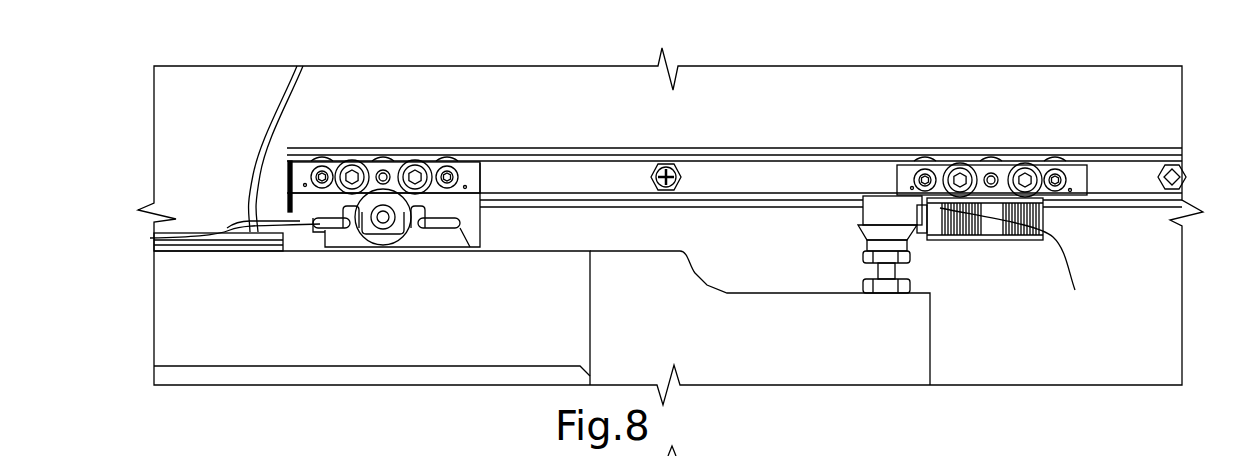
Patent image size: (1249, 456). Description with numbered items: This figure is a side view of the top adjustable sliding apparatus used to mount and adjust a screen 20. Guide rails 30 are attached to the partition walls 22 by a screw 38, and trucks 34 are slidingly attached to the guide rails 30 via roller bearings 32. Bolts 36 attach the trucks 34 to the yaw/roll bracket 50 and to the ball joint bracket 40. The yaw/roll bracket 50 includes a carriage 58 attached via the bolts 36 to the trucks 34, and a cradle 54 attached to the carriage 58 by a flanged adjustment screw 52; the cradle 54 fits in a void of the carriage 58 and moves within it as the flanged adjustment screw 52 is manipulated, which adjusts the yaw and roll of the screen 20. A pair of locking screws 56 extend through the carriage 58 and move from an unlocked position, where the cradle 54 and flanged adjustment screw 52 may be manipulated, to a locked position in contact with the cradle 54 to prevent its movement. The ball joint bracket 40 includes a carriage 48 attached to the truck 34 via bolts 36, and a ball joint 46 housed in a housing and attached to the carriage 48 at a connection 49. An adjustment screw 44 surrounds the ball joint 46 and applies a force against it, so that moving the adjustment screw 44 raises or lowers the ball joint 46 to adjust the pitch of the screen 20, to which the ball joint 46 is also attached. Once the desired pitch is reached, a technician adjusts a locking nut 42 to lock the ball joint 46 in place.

The screen 20 is at (207, 320).
The partition wall 22 is at (1142, 112).
The guide rail 30 is at (760, 153).
The roller bearing 32 is at (353, 166).
The truck 34 is at (298, 173).
The bolt 36 is at (320, 154).
The screw 38 is at (667, 168).
The ball joint bracket 40 is at (1010, 113).
The locking nut 42 is at (898, 264).
The adjustment screw 44 is at (907, 257).
The ball joint 46 is at (886, 216).
The carriage 48 is at (1045, 230).
The connection 49 is at (1075, 290).
The yaw/roll bracket 50 is at (407, 113).
The flanged adjustment screw 52 is at (355, 194).
The cradle 54 is at (310, 240).
The locking screw 56 is at (150, 240).
The carriage 58 is at (468, 204).